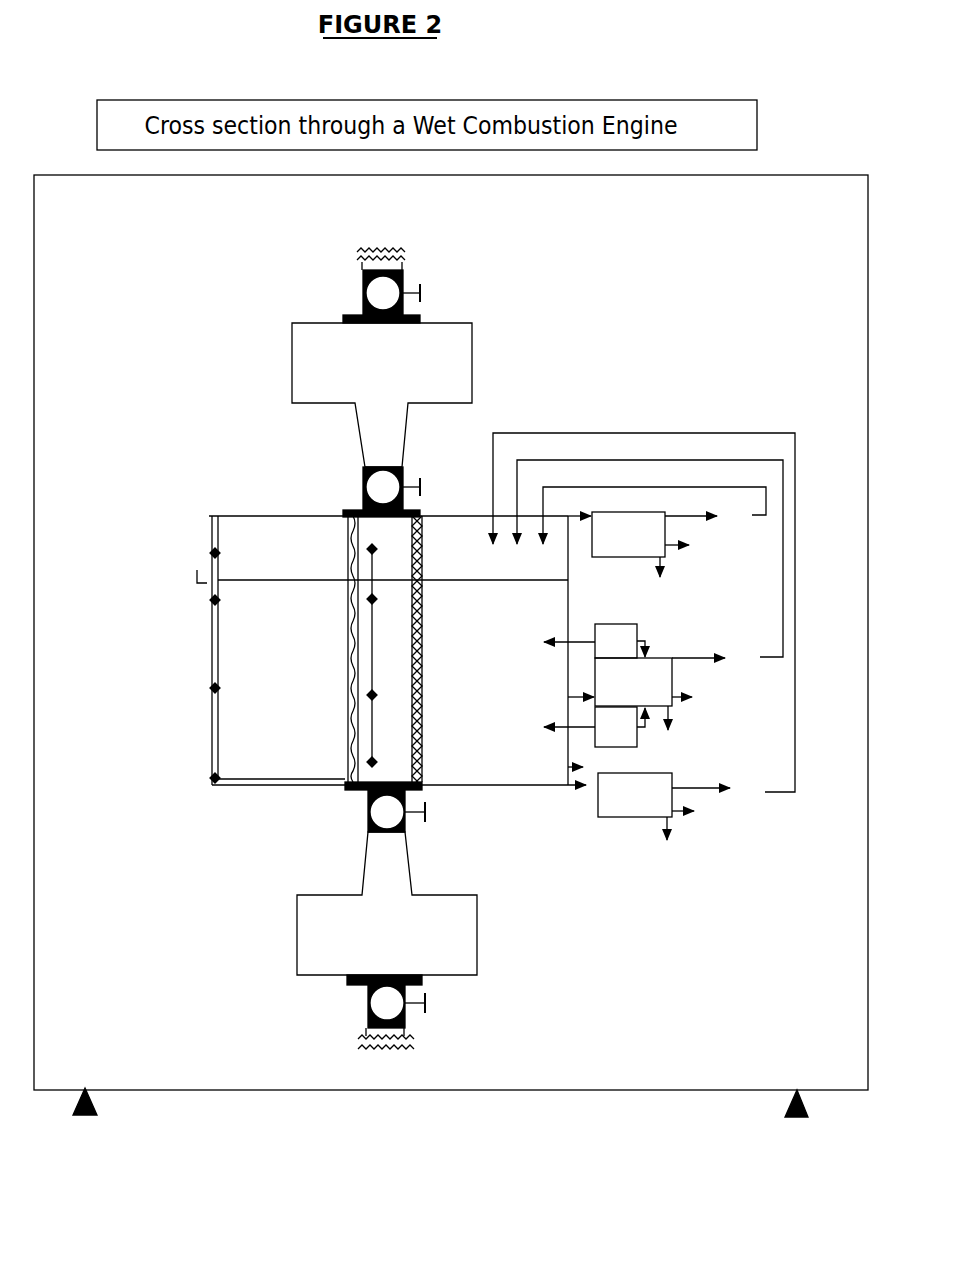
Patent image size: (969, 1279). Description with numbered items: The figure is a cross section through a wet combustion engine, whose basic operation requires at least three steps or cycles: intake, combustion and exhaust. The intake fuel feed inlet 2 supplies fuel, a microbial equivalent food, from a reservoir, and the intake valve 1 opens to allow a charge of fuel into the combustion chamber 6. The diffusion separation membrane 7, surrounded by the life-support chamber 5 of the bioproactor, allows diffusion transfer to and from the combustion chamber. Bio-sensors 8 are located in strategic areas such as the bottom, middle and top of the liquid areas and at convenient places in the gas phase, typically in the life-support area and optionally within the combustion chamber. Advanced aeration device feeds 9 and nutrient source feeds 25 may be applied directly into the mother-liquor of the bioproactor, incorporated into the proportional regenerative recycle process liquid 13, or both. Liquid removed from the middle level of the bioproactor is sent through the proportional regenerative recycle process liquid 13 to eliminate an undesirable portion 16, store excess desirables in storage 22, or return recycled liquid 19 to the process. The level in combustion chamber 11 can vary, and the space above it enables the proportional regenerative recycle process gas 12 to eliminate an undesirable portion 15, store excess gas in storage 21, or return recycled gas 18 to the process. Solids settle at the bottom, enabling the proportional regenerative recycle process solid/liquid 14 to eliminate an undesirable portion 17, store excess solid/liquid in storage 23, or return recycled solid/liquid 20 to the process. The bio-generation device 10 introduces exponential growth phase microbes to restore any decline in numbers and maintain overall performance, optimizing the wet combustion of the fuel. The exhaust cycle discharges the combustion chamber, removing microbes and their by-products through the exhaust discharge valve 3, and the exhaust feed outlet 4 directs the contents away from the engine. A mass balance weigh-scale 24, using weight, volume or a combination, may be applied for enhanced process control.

The intake valve 1 is at (405, 470).
The intake fuel feed inlet 2 is at (382, 247).
The exhaust discharge valve 3 is at (407, 824).
The exhaust feed outlet 4 is at (386, 1055).
The life-support chamber 5 is at (313, 650).
The combustion chamber 6 is at (392, 672).
The diffusion separation membrane 7 is at (355, 703).
The bio-sensors 8 is at (212, 553).
The advanced aeration device feeds 9 is at (594, 641).
The bio-generation device 10 is at (263, 547).
The level in combustion chamber 11 is at (258, 577).
The proportional regenerative recycle process gas 12 is at (616, 534).
The proportional regenerative recycle process liquid 13 is at (620, 682).
The proportional regenerative recycle process solid/liquid 14 is at (635, 795).
The undesirable portion—gas regeneration/recycle process 15 is at (660, 584).
The undesirable portion—liquid regeneration/recycle process 16 is at (668, 735).
The undesirable portion—solid regeneration/recycle process 17 is at (665, 846).
The recycled gas for return to process 18 is at (654, 515).
The recycled liquid for return to process 19 is at (650, 567).
The recycled solid/liquid for return to process 20 is at (644, 621).
The storage for excess gas recycled 21 is at (694, 557).
The storage for excess liquid recycled 22 is at (699, 705).
The storage for excess solid/liquid recycled 23 is at (700, 823).
The mass balance weigh-scale 24 is at (101, 1115).
The nutrient source feeds 25 is at (594, 727).